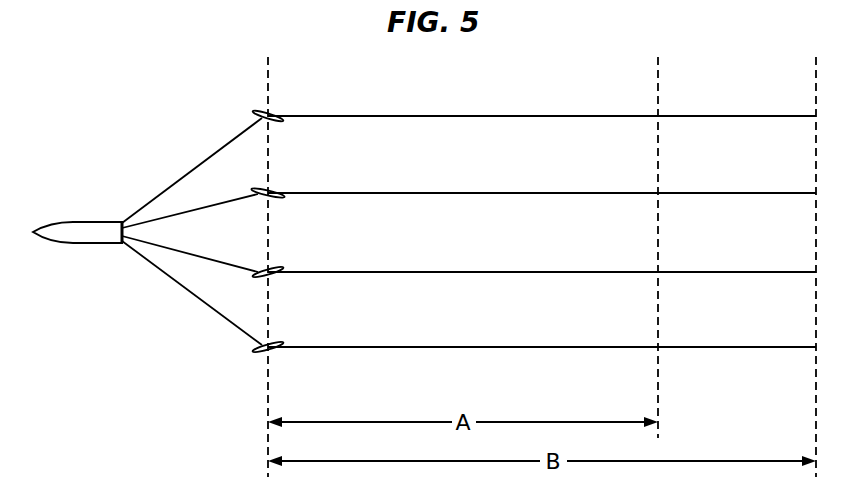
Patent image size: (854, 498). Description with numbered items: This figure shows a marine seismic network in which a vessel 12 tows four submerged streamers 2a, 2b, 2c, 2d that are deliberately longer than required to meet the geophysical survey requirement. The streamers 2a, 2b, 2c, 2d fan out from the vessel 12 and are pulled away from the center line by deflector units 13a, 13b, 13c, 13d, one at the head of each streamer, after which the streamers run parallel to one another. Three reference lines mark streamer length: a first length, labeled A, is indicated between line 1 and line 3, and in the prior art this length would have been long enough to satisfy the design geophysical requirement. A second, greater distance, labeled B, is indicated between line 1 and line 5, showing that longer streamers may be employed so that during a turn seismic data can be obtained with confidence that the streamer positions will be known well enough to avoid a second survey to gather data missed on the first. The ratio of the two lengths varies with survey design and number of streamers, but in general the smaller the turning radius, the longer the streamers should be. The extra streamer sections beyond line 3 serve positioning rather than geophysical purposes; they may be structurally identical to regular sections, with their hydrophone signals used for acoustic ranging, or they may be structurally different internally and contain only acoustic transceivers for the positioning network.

The line 1 is at (268, 72).
The streamer 2a is at (467, 116).
The streamer 2b is at (467, 193).
The streamer 2c is at (467, 272).
The streamer 2d is at (467, 347).
The line 3 is at (658, 72).
The line 5 is at (816, 85).
The vessel 12 is at (68, 228).
The deflector unit 13a is at (268, 105).
The deflector unit 13b is at (268, 186).
The deflector unit 13c is at (264, 278).
The deflector unit 13d is at (264, 353).